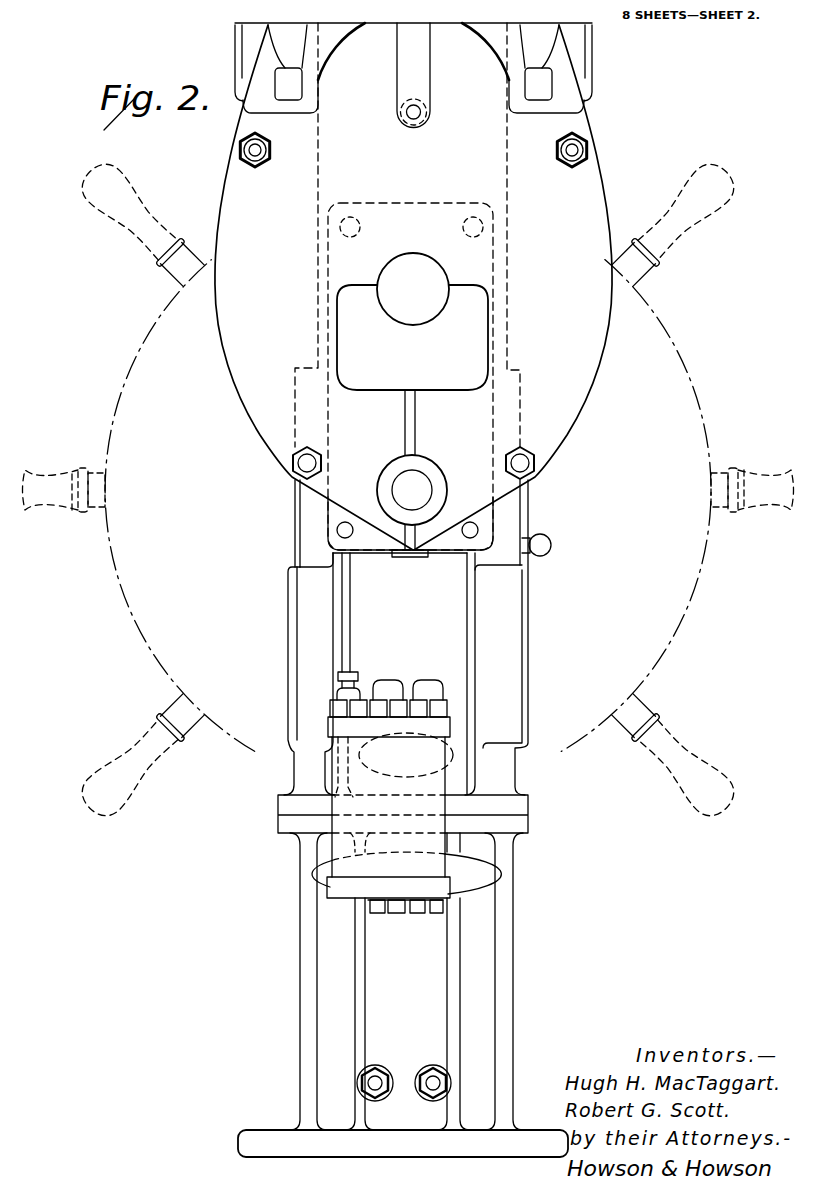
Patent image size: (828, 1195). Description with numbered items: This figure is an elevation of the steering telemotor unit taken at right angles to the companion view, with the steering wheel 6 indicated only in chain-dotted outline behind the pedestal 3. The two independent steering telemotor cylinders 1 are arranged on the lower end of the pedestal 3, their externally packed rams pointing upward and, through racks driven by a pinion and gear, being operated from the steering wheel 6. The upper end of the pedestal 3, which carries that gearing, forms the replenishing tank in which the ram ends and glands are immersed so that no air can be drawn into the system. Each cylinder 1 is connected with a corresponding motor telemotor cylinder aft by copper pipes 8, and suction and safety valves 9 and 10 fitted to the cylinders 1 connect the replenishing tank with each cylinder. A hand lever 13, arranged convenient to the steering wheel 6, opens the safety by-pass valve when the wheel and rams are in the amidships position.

The steering telemotor cylinder 1 is at (414, 912).
The pedestal 3 is at (529, 737).
The steering wheel 6 is at (697, 392).
The copper pipes 8 is at (433, 1083).
The suction valve 9 is at (425, 684).
The safety valve 10 is at (358, 678).
The hand lever 13 is at (551, 547).